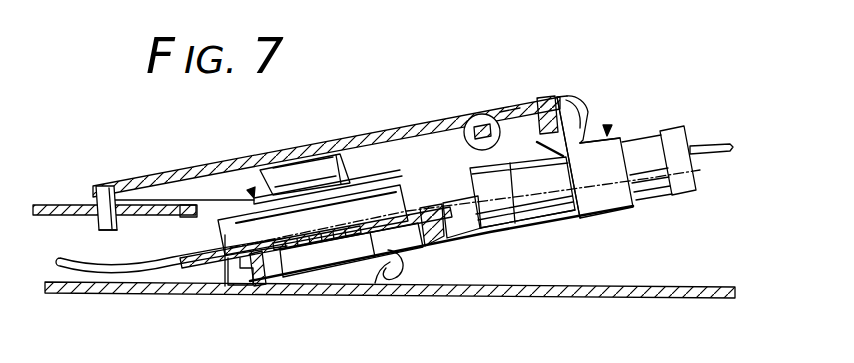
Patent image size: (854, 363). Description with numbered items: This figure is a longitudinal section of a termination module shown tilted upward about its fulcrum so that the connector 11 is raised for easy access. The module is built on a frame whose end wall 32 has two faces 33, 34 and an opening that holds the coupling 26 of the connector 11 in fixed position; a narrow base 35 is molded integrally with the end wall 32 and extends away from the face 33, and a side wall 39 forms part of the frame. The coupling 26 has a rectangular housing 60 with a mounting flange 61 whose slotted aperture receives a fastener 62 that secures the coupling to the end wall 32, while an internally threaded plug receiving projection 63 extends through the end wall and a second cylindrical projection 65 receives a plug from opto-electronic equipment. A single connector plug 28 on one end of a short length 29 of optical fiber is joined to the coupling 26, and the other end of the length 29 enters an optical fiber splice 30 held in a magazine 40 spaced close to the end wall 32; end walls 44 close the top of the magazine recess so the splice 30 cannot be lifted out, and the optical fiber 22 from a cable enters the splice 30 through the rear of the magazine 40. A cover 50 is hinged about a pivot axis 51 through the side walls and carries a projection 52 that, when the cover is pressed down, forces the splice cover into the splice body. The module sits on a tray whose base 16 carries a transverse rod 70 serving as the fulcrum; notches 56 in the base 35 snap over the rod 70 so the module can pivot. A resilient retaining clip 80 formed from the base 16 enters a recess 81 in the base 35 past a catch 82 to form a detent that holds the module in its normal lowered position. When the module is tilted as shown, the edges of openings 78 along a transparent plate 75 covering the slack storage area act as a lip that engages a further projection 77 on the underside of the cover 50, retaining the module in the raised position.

The connector 11 is at (617, 106).
The base of the tray 16 is at (578, 290).
The optical fiber 22 is at (118, 272).
The coupling 26 is at (619, 136).
The connector plug 28 is at (508, 216).
The length of optical fiber 29 is at (461, 240).
The optical fiber splice 30 is at (251, 192).
The end wall 32 is at (540, 97).
The face of the end wall 33 is at (545, 148).
The face of the end wall 34 is at (564, 96).
The base 35 is at (547, 226).
The side wall 39 is at (513, 112).
The magazine 40 is at (215, 226).
The end walls 44 is at (250, 222).
The cover 50 is at (392, 130).
The pivot axis 51 is at (484, 114).
The projection 52 is at (357, 152).
The notch 56 is at (231, 286).
The rectangular housing 60 is at (622, 210).
The mounting flange 61 is at (608, 127).
The fastener 62 is at (582, 125).
The plug receiving projection 63 is at (572, 216).
The second cylindrical projection 65 is at (654, 190).
The rod 70 is at (264, 286).
The plate 75 is at (43, 205).
The projection 77 is at (97, 203).
The openings 78 is at (96, 221).
The resilient retaining clip 80 is at (404, 284).
The recess 81 is at (419, 250).
The catch 82 is at (386, 268).